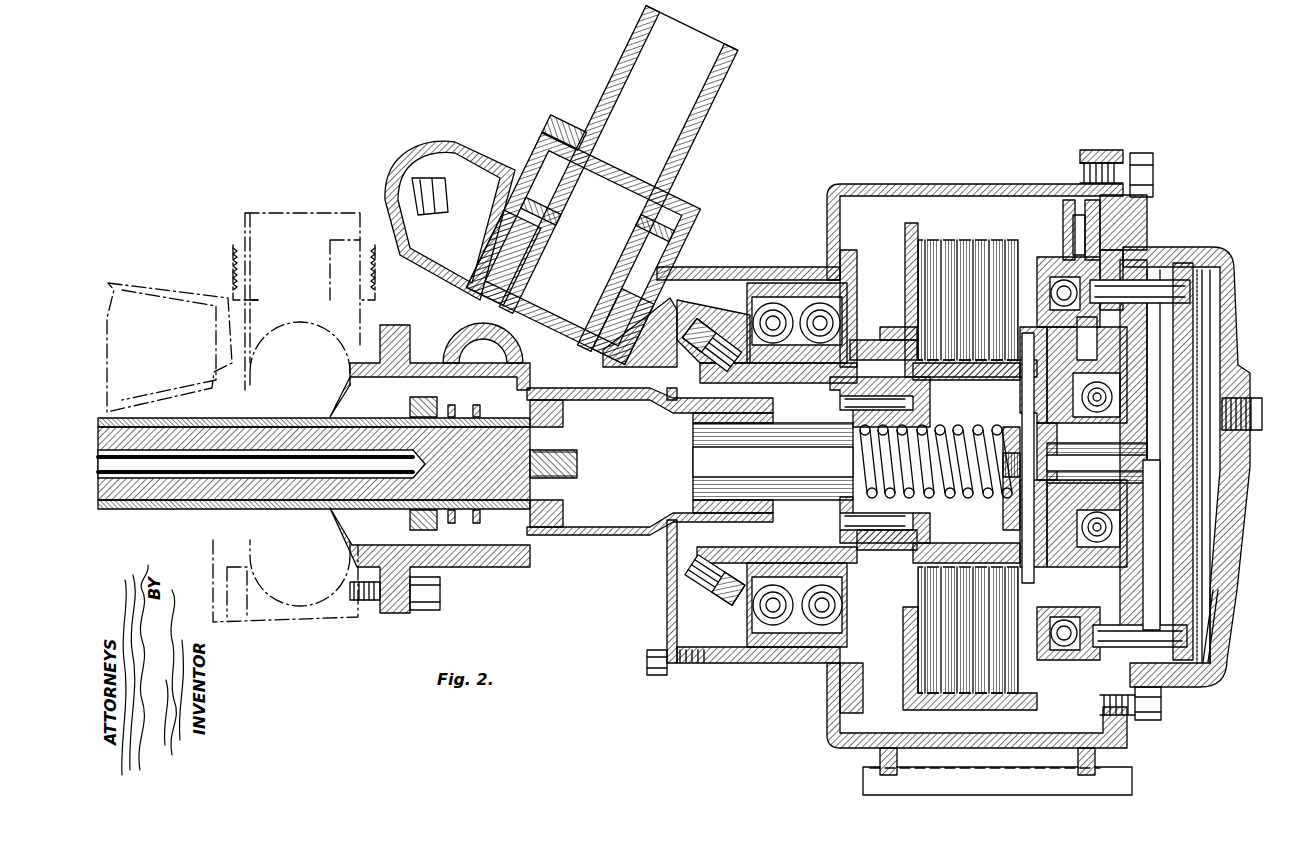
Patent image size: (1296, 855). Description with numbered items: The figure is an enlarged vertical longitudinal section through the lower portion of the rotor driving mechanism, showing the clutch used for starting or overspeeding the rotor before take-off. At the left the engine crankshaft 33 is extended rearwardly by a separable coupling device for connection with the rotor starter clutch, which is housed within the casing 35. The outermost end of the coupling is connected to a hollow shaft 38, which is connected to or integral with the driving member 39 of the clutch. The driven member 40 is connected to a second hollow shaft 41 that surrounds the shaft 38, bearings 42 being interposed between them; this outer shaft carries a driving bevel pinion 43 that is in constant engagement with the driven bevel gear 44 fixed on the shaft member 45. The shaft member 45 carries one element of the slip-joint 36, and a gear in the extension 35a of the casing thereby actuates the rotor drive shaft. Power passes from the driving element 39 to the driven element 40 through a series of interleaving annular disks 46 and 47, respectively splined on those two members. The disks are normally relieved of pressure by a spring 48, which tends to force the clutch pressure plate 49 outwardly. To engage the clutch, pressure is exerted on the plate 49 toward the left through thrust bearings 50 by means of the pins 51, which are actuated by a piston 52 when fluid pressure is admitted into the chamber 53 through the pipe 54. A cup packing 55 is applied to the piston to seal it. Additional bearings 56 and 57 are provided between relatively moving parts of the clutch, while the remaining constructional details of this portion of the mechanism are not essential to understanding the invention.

The engine crankshaft 33 is at (148, 482).
The casing 35 is at (972, 184).
The extension of the casing 35a is at (405, 147).
The slip-joint 36 is at (602, 175).
The hollow shaft 38 is at (810, 500).
The driving member of the clutch 39 is at (935, 372).
The driven member of the clutch 40 is at (918, 235).
The hollow shaft 41 is at (835, 505).
The bearings 42 is at (915, 405).
The driving bevel pinion 43 is at (712, 590).
The driven bevel gear 44 is at (445, 214).
The shaft member 45 is at (587, 240).
The annular disks 46 is at (990, 372).
The annular disks 47 is at (1073, 222).
The spring 48 is at (985, 496).
The clutch pressure plate 49 is at (1032, 700).
The thrust bearings 50 is at (1135, 290).
The pins 51 is at (1180, 278).
The piston 52 is at (1200, 527).
The chamber 53 is at (1215, 502).
The pipe 54 is at (593, 525).
The cup packing 55 is at (1212, 640).
The bearings 56 is at (1075, 540).
The bearings 57 is at (772, 648).